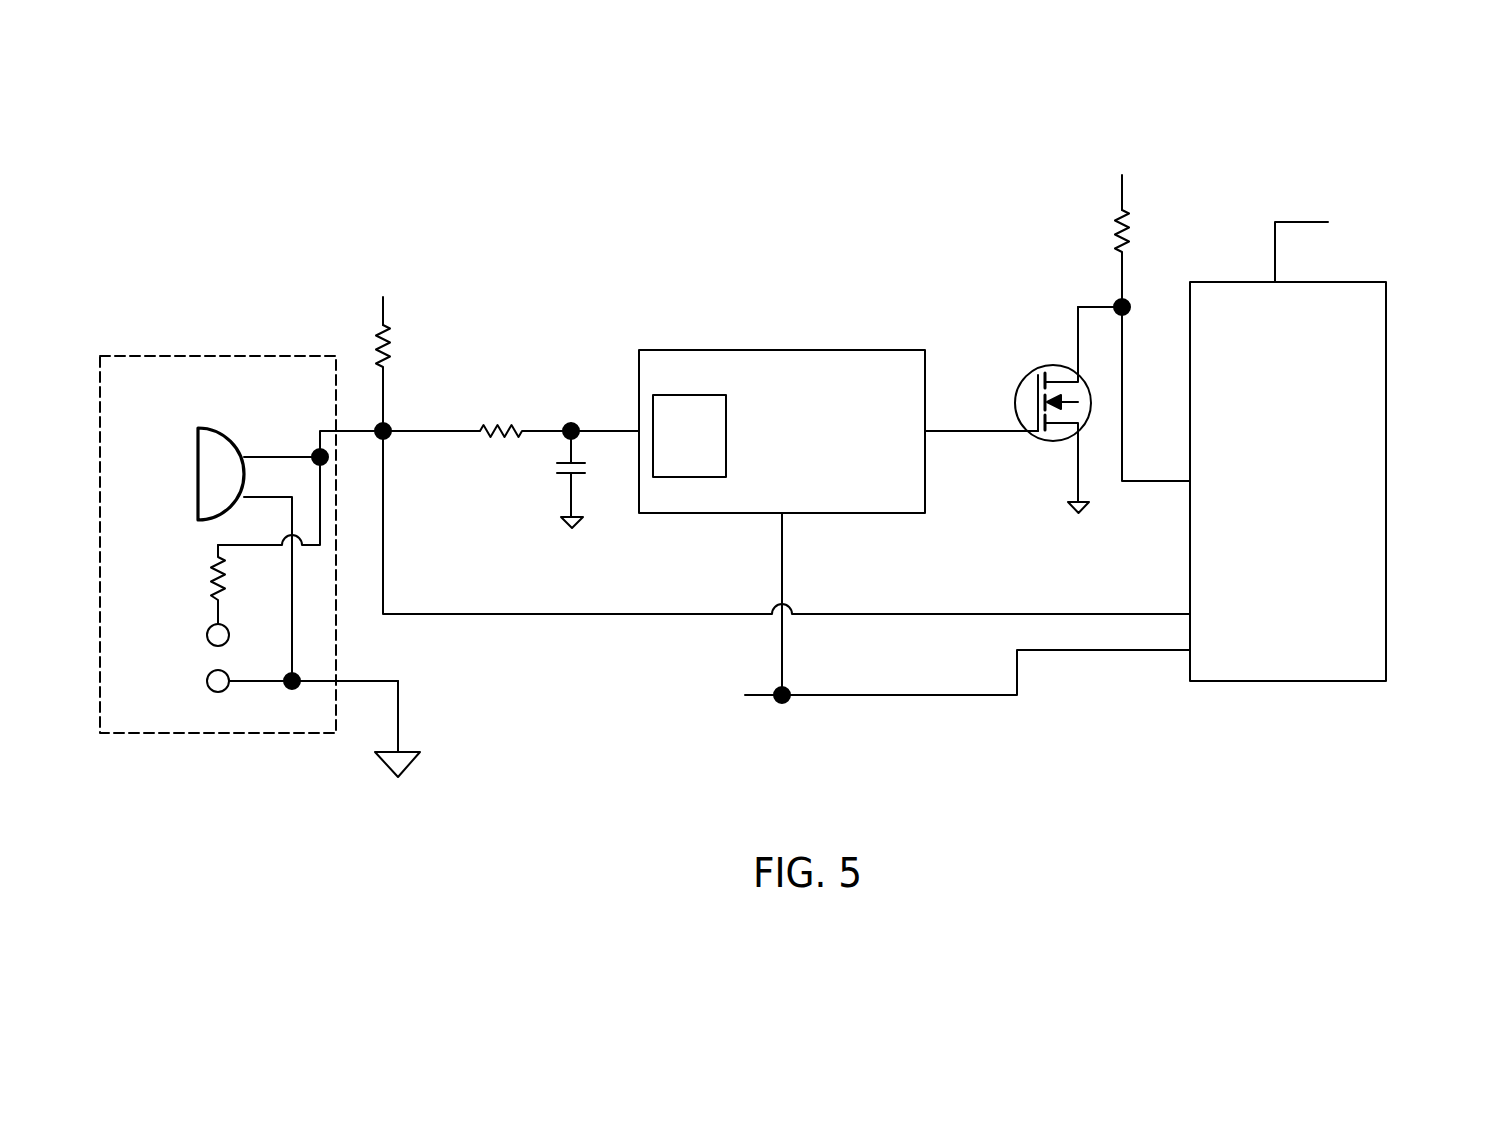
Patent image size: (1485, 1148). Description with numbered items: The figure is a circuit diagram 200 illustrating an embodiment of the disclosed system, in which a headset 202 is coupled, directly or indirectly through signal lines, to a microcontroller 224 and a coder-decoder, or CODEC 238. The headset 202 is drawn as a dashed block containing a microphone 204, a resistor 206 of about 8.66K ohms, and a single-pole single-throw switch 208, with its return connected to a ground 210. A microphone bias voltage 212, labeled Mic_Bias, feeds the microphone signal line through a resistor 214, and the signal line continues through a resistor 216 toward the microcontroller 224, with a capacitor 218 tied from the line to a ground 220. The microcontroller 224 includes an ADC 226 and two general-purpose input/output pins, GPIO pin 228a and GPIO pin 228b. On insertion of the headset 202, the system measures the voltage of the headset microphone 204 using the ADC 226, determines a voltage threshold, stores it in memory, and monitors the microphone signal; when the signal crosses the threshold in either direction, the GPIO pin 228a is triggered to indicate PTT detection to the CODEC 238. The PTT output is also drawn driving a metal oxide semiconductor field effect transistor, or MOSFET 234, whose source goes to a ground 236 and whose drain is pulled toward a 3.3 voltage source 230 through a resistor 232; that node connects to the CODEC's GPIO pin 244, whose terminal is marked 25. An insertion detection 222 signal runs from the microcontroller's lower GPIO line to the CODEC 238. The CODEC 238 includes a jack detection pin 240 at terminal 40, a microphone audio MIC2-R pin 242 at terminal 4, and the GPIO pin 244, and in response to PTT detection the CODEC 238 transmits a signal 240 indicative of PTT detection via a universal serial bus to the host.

The circuit diagram 200 is at (283, 198).
The headset 202 is at (218, 356).
The microphone 204 is at (256, 554).
The resistor 206 is at (188, 595).
The switch 208 is at (207, 681).
The ground 210 is at (396, 743).
The microphone bias voltage 212 is at (383, 282).
The resistor 214 is at (410, 378).
The resistor 216 is at (511, 408).
The capacitor 218 is at (542, 474).
The ground 220 is at (569, 540).
The insertion detection 222 is at (916, 626).
The microcontroller 224 is at (781, 350).
The ADC 226 is at (689, 436).
The GPIO pin 228a is at (780, 487).
The GPIO pin 228b is at (879, 432).
The 3.3 voltage source 230 is at (1128, 162).
The resistor 232 is at (1152, 345).
The metal oxide semiconductor field effect transistor (MOSFET) 234 is at (1050, 404).
The ground 236 is at (1079, 523).
The coder-decoder (CODEC) 238 is at (1287, 681).
The jack detection (JD) pin 240 is at (1345, 440).
The microphone audio pin 242 is at (1267, 618).
The GPIO pin 244 is at (1240, 483).
The pin 25 is at (1157, 463).
The pin 4 is at (1158, 598).
The pin 40 is at (1158, 636).